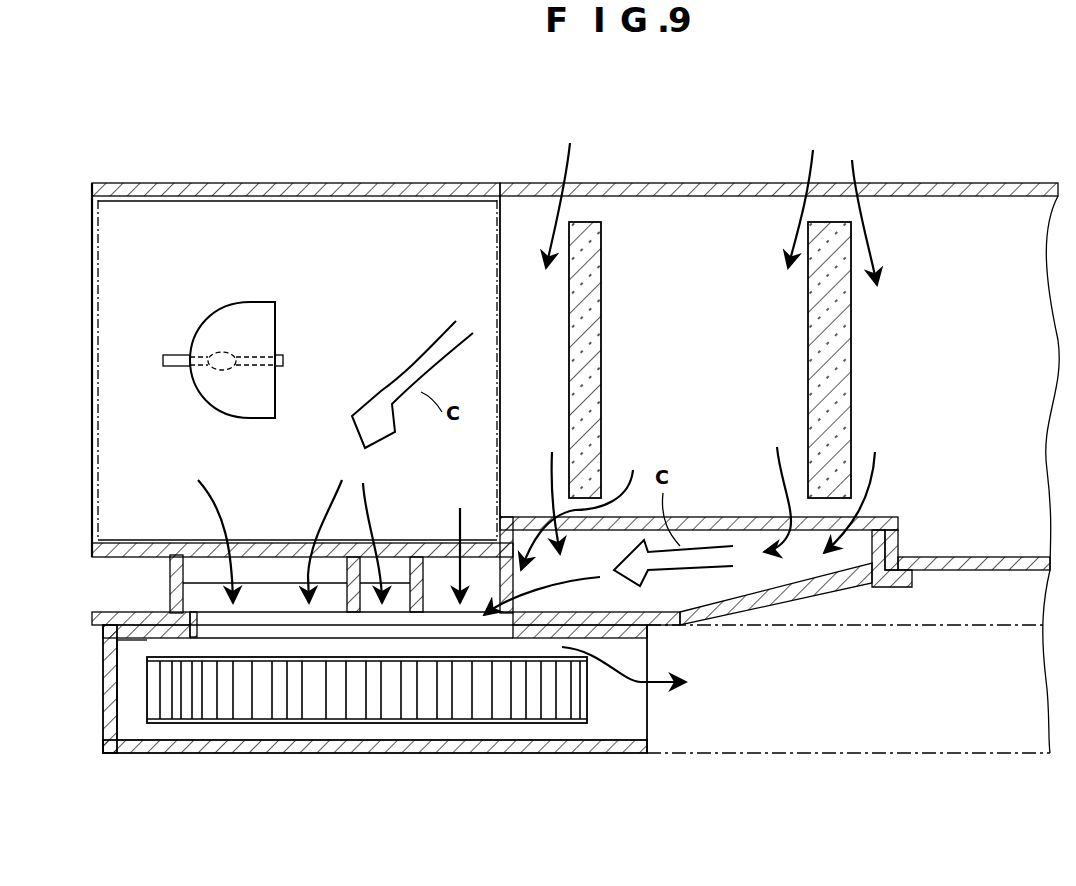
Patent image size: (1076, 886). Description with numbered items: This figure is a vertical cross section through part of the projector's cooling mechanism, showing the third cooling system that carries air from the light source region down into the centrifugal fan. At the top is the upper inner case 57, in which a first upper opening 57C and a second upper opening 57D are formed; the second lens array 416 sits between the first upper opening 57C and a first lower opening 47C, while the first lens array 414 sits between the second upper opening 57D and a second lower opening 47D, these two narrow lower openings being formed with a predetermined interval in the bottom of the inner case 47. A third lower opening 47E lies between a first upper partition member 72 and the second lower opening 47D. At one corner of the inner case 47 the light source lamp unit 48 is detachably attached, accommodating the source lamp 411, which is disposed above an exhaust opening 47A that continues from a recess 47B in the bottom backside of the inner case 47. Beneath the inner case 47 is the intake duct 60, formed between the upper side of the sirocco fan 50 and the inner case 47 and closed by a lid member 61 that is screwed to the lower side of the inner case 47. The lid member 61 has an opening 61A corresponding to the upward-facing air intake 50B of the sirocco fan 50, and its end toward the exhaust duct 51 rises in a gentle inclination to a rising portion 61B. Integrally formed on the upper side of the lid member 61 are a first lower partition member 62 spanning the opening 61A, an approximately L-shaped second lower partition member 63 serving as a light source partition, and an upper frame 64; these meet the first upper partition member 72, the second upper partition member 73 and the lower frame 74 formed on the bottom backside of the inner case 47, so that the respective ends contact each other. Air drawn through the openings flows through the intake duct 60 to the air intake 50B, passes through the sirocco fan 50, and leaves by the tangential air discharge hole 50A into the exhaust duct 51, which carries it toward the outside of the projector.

The inner case 47 is at (90, 326).
The light source lamp unit 48 is at (297, 190).
The upper inner case 57 is at (944, 185).
The first upper opening 57C is at (795, 185).
The second upper opening 57D is at (550, 185).
The source lamp 411 is at (233, 322).
The first lens array 414 is at (601, 357).
The second lens array 416 is at (852, 357).
The exhaust opening 47A is at (196, 548).
The recess 47B is at (722, 540).
The first lower opening 47C is at (833, 515).
The second lower opening 47D is at (570, 505).
The third lower opening 47E is at (490, 545).
The first upper partition member 72 is at (398, 553).
The second upper partition member 73 is at (325, 555).
The lower frame 74 is at (155, 558).
The upper frame 64 is at (178, 578).
The lid member 61 is at (90, 618).
The opening 61A is at (200, 603).
The rising portion 61B is at (858, 590).
The intake duct 60 is at (710, 580).
The sirocco fan 50 is at (104, 735).
The air discharge hole 50A is at (648, 735).
The air intake 50B is at (210, 657).
The first lower partition member 62 is at (410, 655).
The second lower partition member 63 is at (345, 660).
The exhaust duct 51 is at (812, 757).